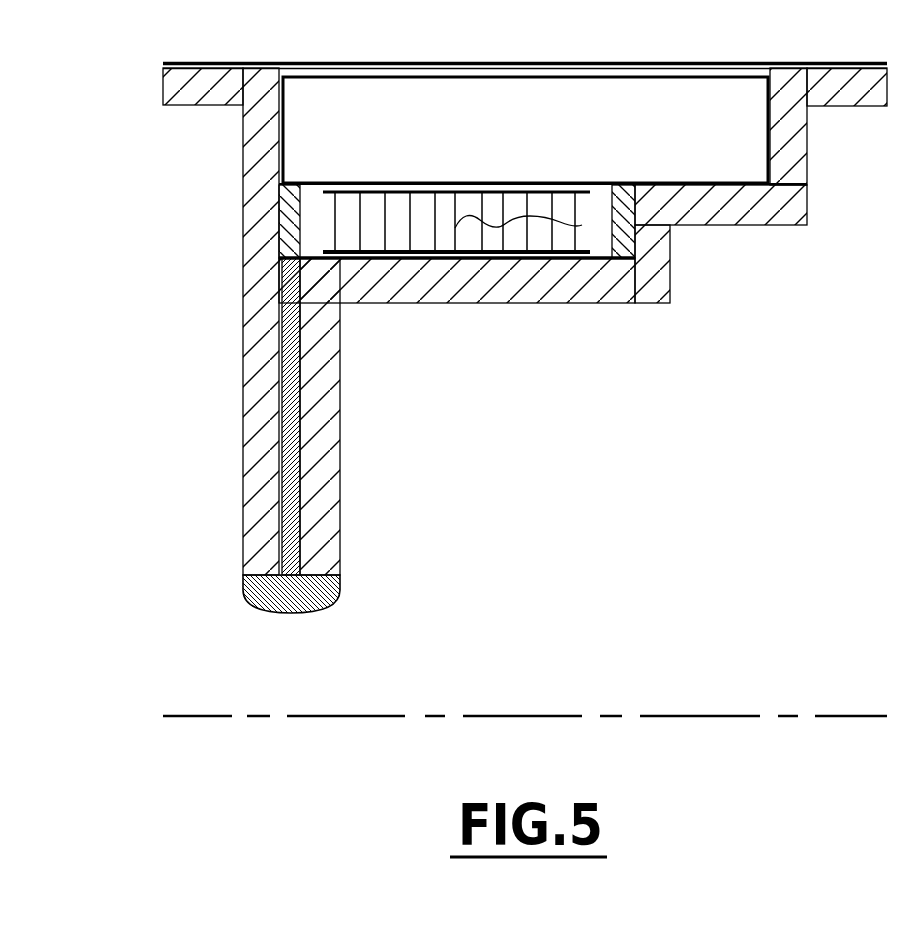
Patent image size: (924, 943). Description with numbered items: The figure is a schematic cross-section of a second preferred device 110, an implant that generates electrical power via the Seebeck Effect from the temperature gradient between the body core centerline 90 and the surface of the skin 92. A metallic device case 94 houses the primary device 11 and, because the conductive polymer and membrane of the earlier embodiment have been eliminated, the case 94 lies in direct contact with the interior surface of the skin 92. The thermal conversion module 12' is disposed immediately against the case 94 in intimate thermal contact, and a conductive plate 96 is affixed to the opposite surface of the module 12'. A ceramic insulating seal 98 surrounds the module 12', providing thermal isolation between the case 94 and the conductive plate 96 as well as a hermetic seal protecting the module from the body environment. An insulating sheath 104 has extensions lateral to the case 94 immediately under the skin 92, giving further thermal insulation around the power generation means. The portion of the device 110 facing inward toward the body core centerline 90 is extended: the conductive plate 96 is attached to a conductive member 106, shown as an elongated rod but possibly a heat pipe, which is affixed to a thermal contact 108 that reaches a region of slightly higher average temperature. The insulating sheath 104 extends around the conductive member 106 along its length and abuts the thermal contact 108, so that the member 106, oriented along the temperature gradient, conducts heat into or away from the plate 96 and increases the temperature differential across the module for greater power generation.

The primary device 11 is at (703, 97).
The thermal conversion module 12' is at (456, 193).
The body core centerline 90 is at (735, 713).
The skin surface 92 is at (305, 62).
The device case 94 is at (633, 64).
The conductive plate 96 is at (572, 305).
The ceramic insulating seal 98 is at (290, 209).
The insulating sheath 104 is at (190, 93).
The conductive member 106 is at (283, 488).
The thermal contact 108 is at (322, 603).
The second preferred device 110 is at (745, 418).